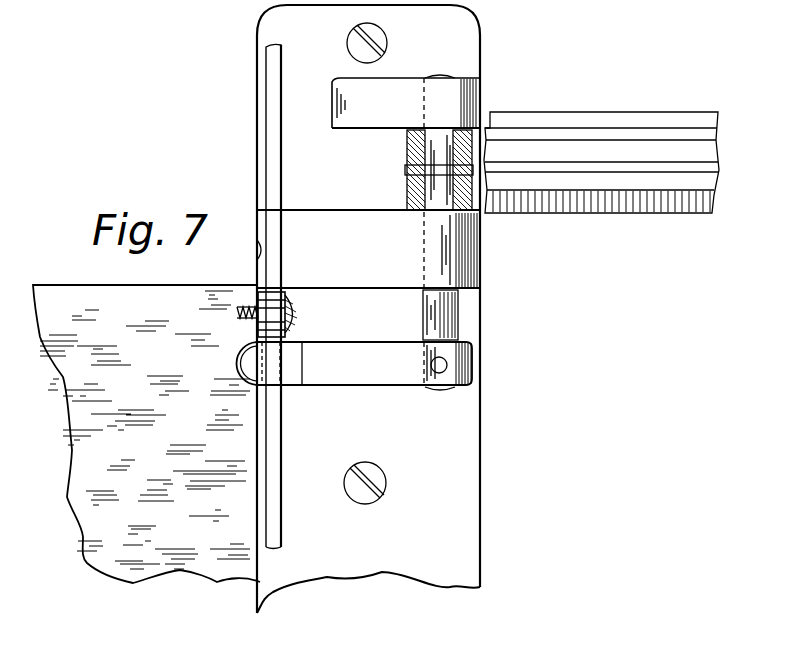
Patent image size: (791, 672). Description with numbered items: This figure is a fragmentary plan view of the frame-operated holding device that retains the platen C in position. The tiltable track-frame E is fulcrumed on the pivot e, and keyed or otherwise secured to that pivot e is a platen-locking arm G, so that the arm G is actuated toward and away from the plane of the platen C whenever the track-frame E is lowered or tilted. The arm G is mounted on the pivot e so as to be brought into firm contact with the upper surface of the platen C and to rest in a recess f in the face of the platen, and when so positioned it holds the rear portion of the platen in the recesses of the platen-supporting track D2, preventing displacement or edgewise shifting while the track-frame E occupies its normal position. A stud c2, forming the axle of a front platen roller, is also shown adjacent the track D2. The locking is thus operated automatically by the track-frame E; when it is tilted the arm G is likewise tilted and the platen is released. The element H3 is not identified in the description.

The hinge plate H3 is at (368, 309).
The tiltable track-frame E is at (674, 157).
The platen-supporting track D2 is at (292, 243).
The stud c2 is at (274, 319).
The pivot e is at (451, 322).
The recess f is at (241, 356).
The platen-locking arm G is at (398, 372).
The platen C is at (82, 410).